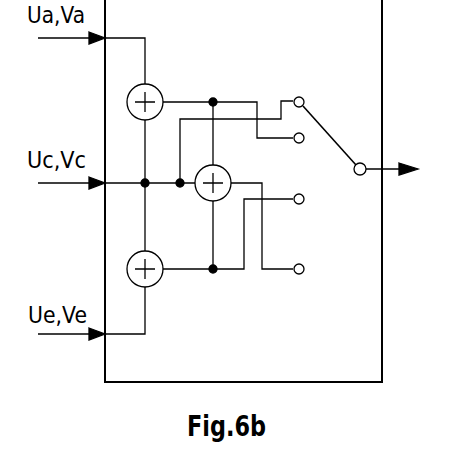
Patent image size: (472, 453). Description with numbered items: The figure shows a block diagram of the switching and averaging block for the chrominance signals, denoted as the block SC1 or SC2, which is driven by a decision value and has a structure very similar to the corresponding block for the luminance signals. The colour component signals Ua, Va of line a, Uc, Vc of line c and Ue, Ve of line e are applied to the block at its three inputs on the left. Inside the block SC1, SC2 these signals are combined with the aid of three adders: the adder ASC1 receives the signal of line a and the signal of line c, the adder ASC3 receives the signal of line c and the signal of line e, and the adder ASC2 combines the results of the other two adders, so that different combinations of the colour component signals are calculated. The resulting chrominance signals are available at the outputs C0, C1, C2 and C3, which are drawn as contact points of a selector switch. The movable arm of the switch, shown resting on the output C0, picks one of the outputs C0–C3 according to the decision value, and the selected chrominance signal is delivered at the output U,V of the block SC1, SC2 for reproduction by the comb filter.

The adder ASC1 is at (210, 96).
The adder ASC2 is at (236, 185).
The adder ASC3 is at (210, 259).
The output C0 is at (318, 97).
The output C1 is at (315, 151).
The output C2 is at (318, 199).
The output C3 is at (318, 270).
The switching and averaging block SC1 is at (314, 93).
The switching and averaging block SC2 is at (401, 186).